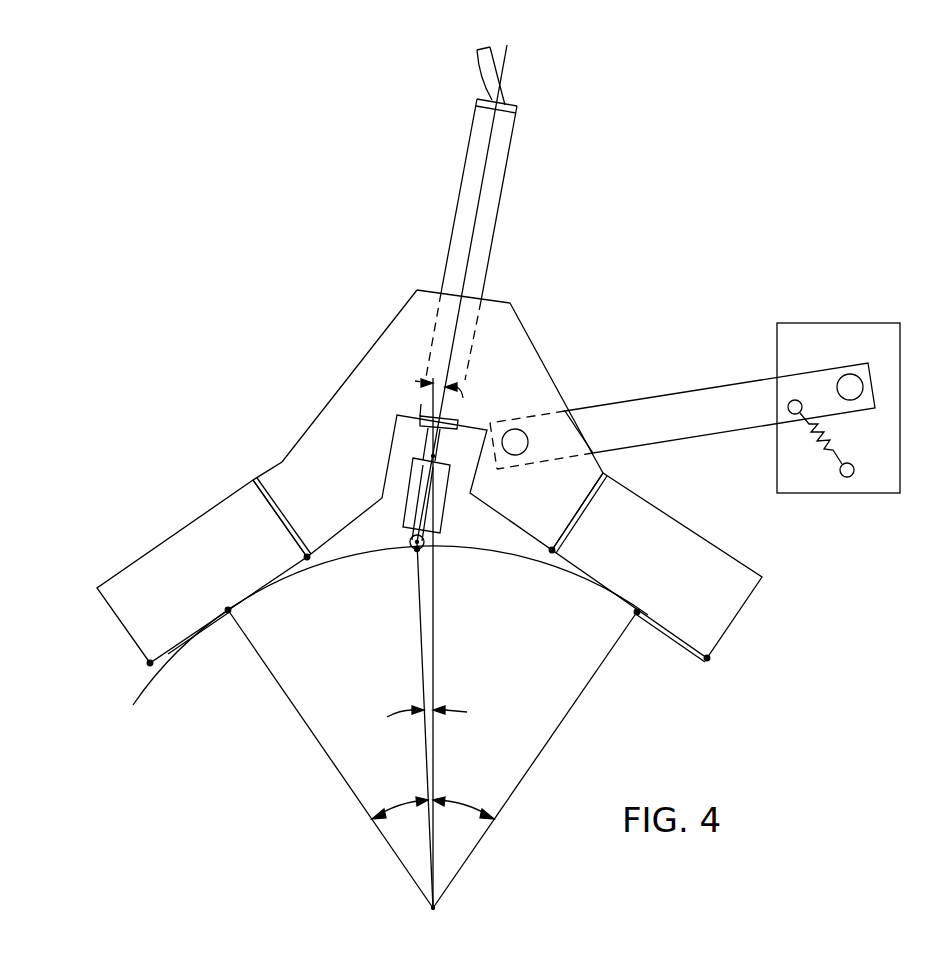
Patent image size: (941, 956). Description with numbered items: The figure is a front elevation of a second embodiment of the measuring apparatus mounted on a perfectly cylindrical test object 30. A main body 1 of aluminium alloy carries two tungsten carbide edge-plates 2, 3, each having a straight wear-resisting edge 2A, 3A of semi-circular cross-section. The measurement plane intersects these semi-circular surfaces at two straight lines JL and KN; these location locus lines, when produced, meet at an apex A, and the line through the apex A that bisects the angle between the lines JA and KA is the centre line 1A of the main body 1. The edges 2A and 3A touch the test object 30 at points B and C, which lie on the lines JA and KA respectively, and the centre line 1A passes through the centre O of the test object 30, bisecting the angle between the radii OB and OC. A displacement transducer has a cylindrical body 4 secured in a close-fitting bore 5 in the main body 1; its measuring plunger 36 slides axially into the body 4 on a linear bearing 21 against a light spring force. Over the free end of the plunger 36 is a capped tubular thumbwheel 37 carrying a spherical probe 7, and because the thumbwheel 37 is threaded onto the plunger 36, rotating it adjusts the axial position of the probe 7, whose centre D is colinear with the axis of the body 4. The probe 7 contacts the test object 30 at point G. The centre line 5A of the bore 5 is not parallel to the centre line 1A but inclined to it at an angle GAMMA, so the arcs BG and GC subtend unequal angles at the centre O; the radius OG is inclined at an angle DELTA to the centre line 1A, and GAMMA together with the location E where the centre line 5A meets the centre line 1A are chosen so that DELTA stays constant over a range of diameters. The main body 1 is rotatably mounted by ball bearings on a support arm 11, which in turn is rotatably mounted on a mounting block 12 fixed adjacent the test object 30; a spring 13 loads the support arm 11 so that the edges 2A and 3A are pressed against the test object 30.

The main body 1 is at (287, 472).
The centre line of the main body 1A is at (435, 632).
The edge-plate 2 is at (205, 540).
The wear resisting edge 2A is at (175, 657).
The edge-plate 3 is at (667, 548).
The wear resisting edge 3A is at (683, 648).
The transducer body 4 is at (508, 158).
The bore 5 is at (433, 343).
The centre line of the bore 5A is at (470, 257).
The spherical probe 7 is at (412, 548).
The support arm 11 is at (705, 405).
The mounting block 12 is at (825, 333).
The spring 13 is at (810, 440).
The linear bearing 21 is at (423, 410).
The test object 30 is at (137, 703).
The measuring plunger 36 is at (403, 413).
The thumbwheel 37 is at (413, 483).
The apex A is at (434, 472).
The contact point B is at (230, 612).
The contact point C is at (636, 613).
The centre of the spherical probe D is at (409, 538).
The intersection location E is at (425, 455).
The contact point G is at (416, 549).
The point J is at (150, 663).
The point K is at (708, 659).
The point L is at (307, 558).
The point N is at (552, 552).
The centre of the test object O is at (417, 899).
The inclination angle GAMMA is at (484, 398).
The inclination angle DELTA is at (462, 715).